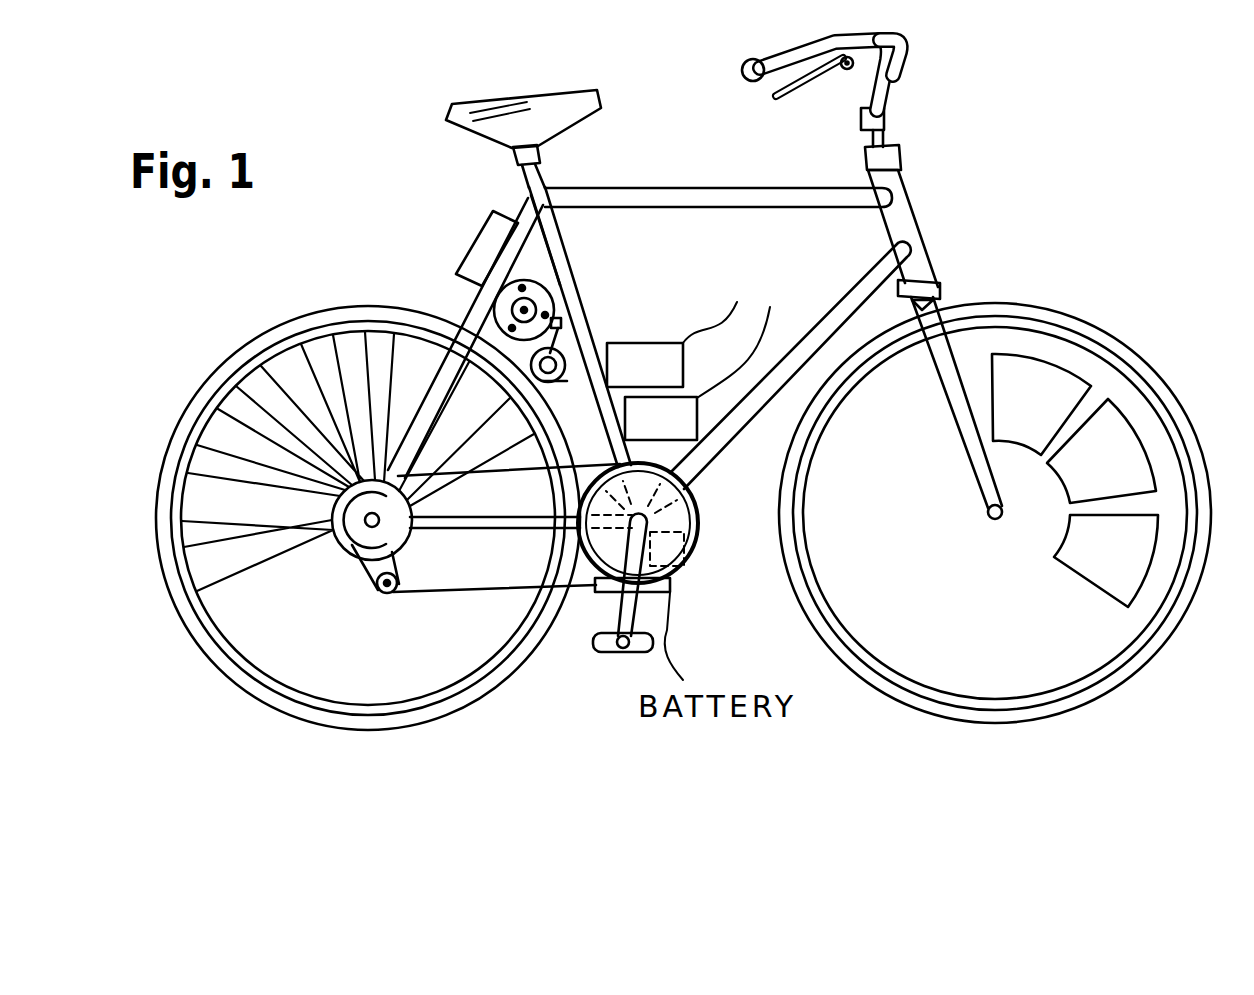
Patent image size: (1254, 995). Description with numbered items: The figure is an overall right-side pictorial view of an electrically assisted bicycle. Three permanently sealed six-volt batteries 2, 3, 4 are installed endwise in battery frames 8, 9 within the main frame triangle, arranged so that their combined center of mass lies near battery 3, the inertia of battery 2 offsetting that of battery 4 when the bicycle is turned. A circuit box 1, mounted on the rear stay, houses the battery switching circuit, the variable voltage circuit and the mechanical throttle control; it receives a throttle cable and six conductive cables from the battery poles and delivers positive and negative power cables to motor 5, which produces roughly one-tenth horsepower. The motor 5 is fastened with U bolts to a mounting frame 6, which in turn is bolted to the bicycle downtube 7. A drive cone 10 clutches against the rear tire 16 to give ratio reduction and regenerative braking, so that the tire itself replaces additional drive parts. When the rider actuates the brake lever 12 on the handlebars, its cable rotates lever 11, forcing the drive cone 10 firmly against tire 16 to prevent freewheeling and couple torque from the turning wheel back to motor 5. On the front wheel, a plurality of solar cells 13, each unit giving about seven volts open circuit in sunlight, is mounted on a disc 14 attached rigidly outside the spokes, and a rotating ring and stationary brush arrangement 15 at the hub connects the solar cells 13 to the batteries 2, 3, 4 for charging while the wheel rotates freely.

The circuit box 1 is at (480, 250).
The battery 2 is at (717, 352).
The battery 3 is at (690, 423).
The battery 4 is at (700, 547).
The motor 5 is at (487, 297).
The mounting frame 6 is at (560, 273).
The bicycle downtube 7 is at (560, 237).
The battery frame 8 is at (597, 343).
The battery frame 9 is at (700, 510).
The drive cone 10 is at (540, 402).
The lever 11 is at (568, 385).
The brake lever 12 is at (800, 90).
The plurality of solar cells 13 is at (1123, 427).
The disc 14 is at (1082, 647).
The rotating ring and stationary brush arrangement 15 is at (995, 520).
The tire 16 is at (268, 340).